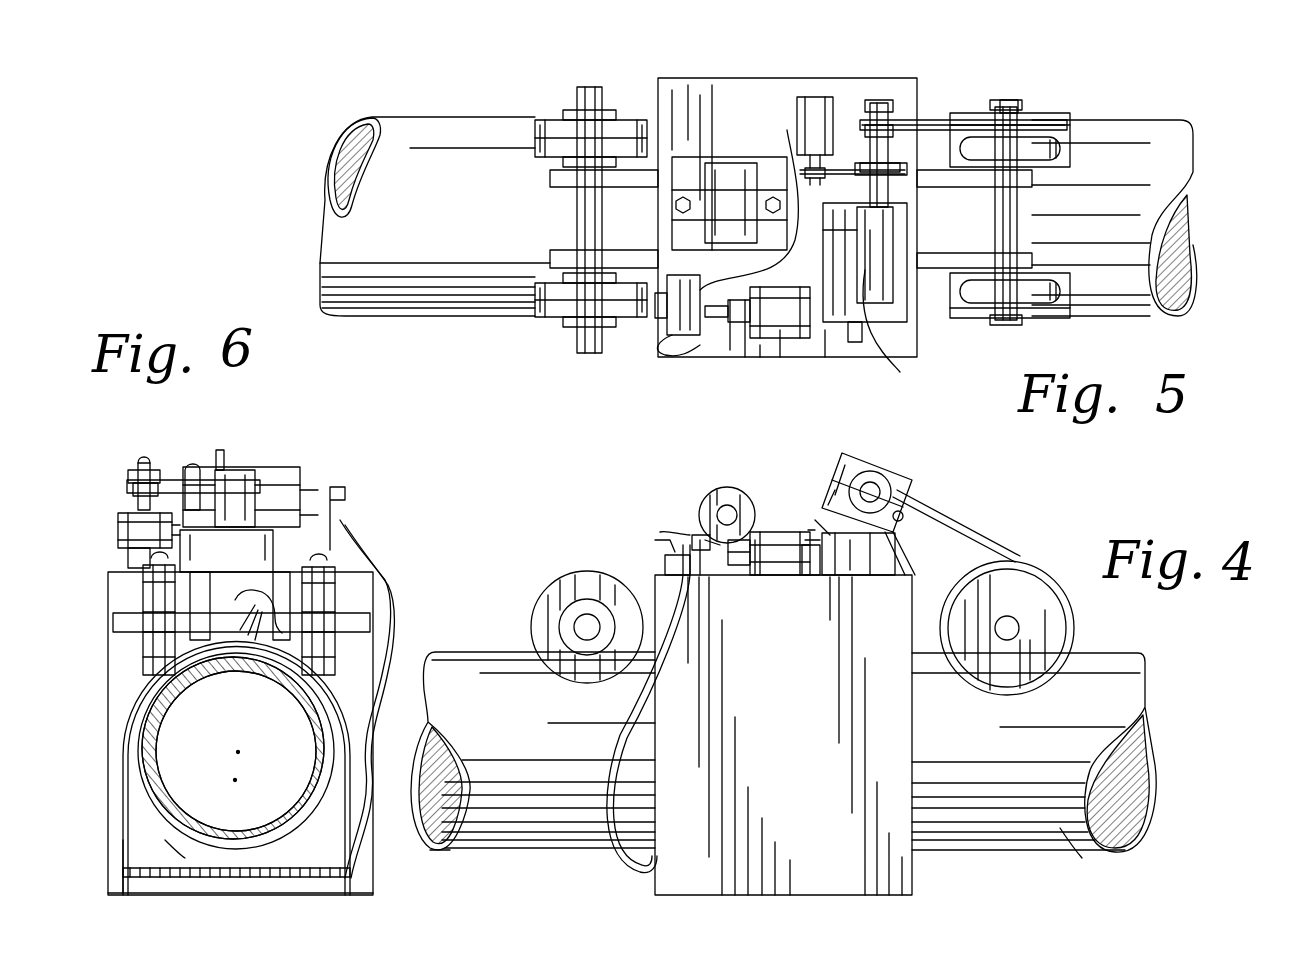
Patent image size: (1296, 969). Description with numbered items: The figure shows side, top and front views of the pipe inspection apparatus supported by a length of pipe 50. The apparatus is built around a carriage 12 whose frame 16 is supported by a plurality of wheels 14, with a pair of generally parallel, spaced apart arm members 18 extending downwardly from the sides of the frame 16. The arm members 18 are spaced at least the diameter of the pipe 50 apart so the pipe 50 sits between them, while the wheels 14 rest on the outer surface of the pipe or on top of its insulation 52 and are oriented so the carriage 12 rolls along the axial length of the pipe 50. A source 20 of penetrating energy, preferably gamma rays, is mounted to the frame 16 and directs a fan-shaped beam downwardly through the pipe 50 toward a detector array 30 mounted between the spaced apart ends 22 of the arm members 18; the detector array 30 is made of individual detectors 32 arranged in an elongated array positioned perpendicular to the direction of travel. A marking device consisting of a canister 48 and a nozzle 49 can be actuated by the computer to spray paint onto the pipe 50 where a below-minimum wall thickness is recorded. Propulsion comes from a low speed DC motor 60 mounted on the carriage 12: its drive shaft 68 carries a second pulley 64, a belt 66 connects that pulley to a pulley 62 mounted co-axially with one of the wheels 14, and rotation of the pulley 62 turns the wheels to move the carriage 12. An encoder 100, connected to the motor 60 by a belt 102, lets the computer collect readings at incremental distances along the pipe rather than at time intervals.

In FIG. 5, the carriage 12 is at (753, 66).
In FIG. 6, the carriage 12 is at (357, 485).
In FIG. 5, the wheels 14 is at (1165, 172).
In FIG. 6, the wheels 14 is at (330, 612).
In FIG. 4, the wheels 14 is at (568, 585).
In FIG. 5, the frame 16 is at (935, 258).
In FIG. 6, the frame 16 is at (256, 562).
In FIG. 4, the frame 16 is at (930, 598).
In FIG. 6, the arm members 18 is at (108, 738).
In FIG. 4, the arm members 18 is at (915, 862).
In FIG. 5, the source of penetrating energy 20 is at (730, 170).
In FIG. 6, the spaced apart ends 22 is at (118, 883).
In FIG. 4, the spaced apart ends 22 is at (400, 870).
In FIG. 6, the detector array 30 is at (123, 862).
In FIG. 4, the detector array 30 is at (725, 490).
In FIG. 6, the individual detectors 32 is at (298, 867).
In FIG. 5, the canister 48 is at (775, 330).
In FIG. 6, the canister 48 is at (365, 545).
In FIG. 4, the canister 48 is at (790, 530).
In FIG. 6, the nozzle 49 is at (258, 640).
In FIG. 4, the nozzle 49 is at (690, 535).
In FIG. 6, the pipe 50 is at (170, 800).
In FIG. 4, the pipe 50 is at (1118, 786).
In FIG. 6, the insulation 52 is at (182, 848).
In FIG. 4, the insulation 52 is at (1058, 832).
In FIG. 5, the DC motor 60 is at (900, 372).
In FIG. 6, the DC motor 60 is at (280, 480).
In FIG. 4, the DC motor 60 is at (905, 478).
In FIG. 5, the pulley 62 is at (1060, 115).
In FIG. 5, the second pulley 64 is at (900, 115).
In FIG. 6, the second pulley 64 is at (135, 462).
In FIG. 5, the belt 66 is at (975, 115).
In FIG. 6, the belt 66 is at (128, 515).
In FIG. 4, the belt 66 is at (962, 540).
In FIG. 5, the drive shaft 68 is at (890, 183).
In FIG. 6, the drive shaft 68 is at (177, 482).
In FIG. 5, the encoder 100 is at (820, 97).
In FIG. 4, the encoder 100 is at (812, 530).
In FIG. 5, the belt 102 is at (878, 110).
In FIG. 4, the belt 102 is at (855, 575).